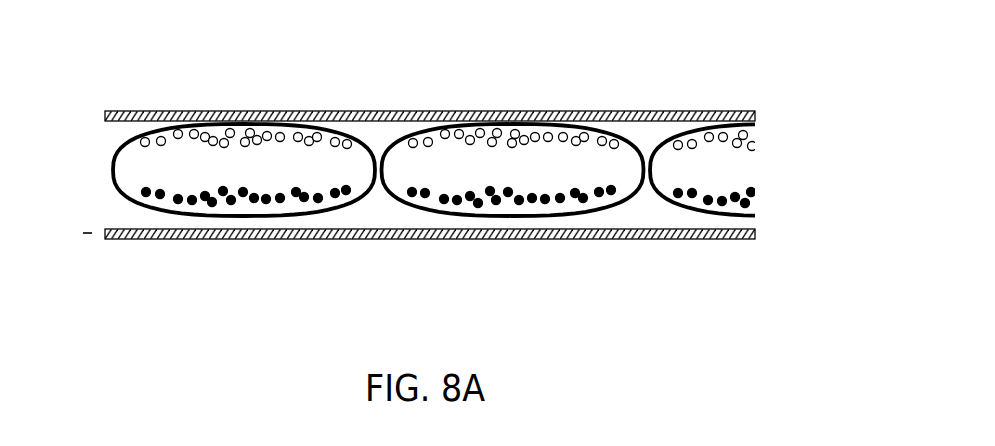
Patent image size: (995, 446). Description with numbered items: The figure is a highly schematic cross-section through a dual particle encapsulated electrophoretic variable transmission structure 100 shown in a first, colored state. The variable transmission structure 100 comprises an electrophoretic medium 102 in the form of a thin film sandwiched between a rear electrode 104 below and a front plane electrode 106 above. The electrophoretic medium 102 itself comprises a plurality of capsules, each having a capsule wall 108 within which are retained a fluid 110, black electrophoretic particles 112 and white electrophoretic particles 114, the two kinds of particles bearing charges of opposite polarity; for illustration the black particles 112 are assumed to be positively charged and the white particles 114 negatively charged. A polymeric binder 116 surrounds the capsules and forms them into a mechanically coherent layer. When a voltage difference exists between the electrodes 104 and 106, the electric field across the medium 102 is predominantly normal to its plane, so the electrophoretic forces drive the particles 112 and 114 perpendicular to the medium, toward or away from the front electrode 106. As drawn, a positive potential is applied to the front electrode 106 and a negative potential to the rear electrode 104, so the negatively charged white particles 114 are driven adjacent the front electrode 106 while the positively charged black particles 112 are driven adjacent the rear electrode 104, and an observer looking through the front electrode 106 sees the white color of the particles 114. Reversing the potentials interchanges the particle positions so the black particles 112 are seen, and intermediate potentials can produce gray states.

The variable transmission structure 100 is at (450, 44).
The electrophoretic medium 102 is at (84, 184).
The rear electrode 104 is at (418, 232).
The front plane electrode 106 is at (618, 112).
The capsule wall 108 is at (288, 217).
The fluid 110 is at (132, 173).
The black electrophoretic particles 112 is at (210, 197).
The white electrophoretic particles 114 is at (192, 138).
The polymeric binder 116 is at (643, 208).